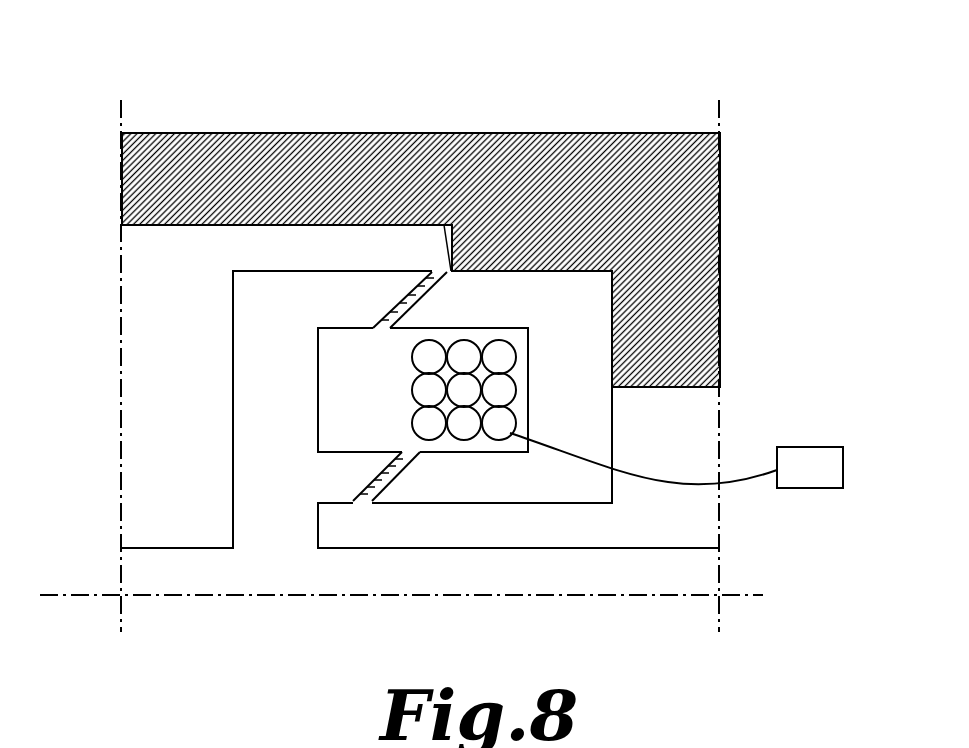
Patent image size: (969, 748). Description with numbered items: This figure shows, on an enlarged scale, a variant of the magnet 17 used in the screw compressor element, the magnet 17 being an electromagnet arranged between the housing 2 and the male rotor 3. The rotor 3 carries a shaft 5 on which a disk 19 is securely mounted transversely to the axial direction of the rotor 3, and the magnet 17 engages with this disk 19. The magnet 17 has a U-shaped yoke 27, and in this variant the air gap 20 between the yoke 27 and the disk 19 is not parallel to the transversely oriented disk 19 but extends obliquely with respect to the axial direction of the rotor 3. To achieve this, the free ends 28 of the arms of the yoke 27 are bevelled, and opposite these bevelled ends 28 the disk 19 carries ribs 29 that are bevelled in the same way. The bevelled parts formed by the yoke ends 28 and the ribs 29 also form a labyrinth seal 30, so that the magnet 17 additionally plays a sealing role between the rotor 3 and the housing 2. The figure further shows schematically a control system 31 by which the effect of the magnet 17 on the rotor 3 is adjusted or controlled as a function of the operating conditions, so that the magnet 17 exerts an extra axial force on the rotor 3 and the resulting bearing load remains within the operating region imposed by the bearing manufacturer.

The housing 2 is at (592, 348).
The male rotor 3 is at (575, 563).
The shaft 5 is at (610, 590).
The magnet 17 is at (558, 318).
The disk 19 is at (262, 310).
The air gap 20 is at (446, 225).
The U-shaped yoke 27 is at (690, 185).
The free ends of the arms of the yoke 28 is at (383, 473).
The ribs 29 is at (338, 302).
The labyrinth seal 30 is at (360, 498).
The control system 31 is at (830, 468).